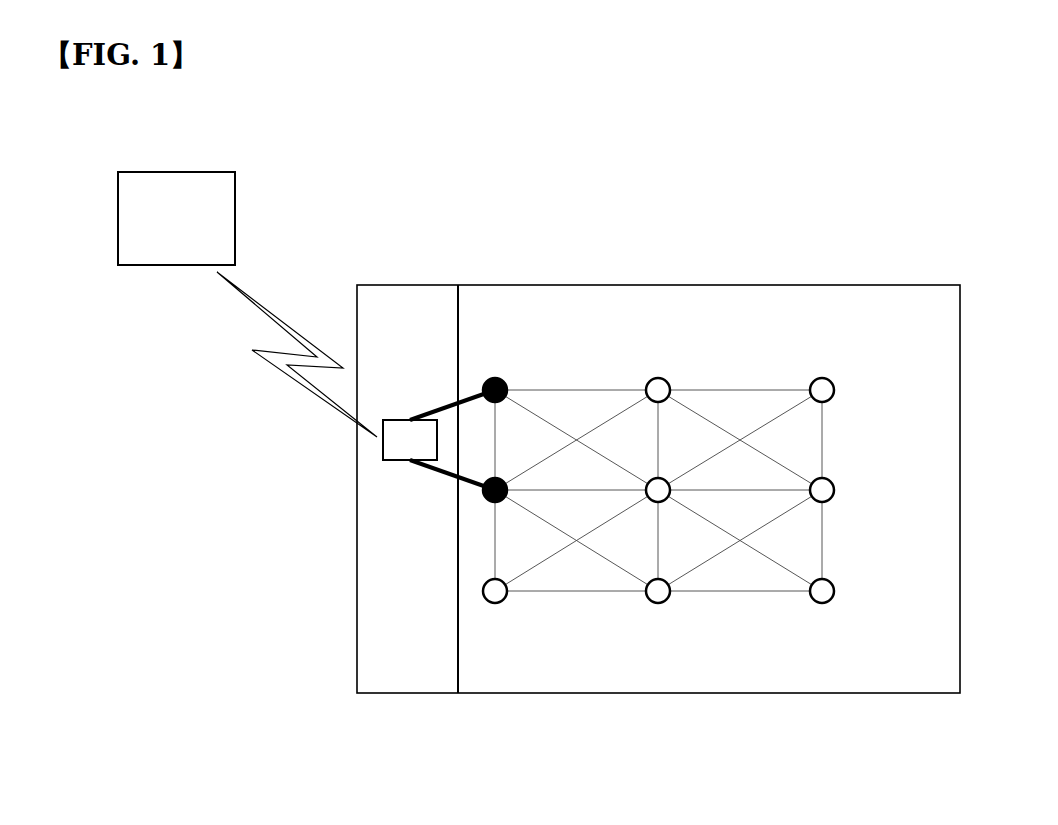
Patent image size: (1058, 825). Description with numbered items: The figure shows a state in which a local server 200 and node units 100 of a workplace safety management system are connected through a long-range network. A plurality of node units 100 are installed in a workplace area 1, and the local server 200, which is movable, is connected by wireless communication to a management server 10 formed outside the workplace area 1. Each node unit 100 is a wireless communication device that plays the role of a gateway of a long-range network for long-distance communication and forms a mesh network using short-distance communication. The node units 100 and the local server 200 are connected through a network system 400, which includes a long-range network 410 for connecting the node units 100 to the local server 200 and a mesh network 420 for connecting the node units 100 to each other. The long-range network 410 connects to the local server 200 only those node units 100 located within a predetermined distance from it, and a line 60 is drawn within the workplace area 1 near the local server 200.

The workplace area 1 is at (860, 285).
The management server 10 is at (247, 304).
The boundary line 60 is at (457, 638).
The node unit 100 is at (493, 378).
The local server 200 is at (395, 460).
The network system 400 is at (612, 361).
The long-range network 410 is at (455, 400).
The mesh network 420 is at (577, 390).